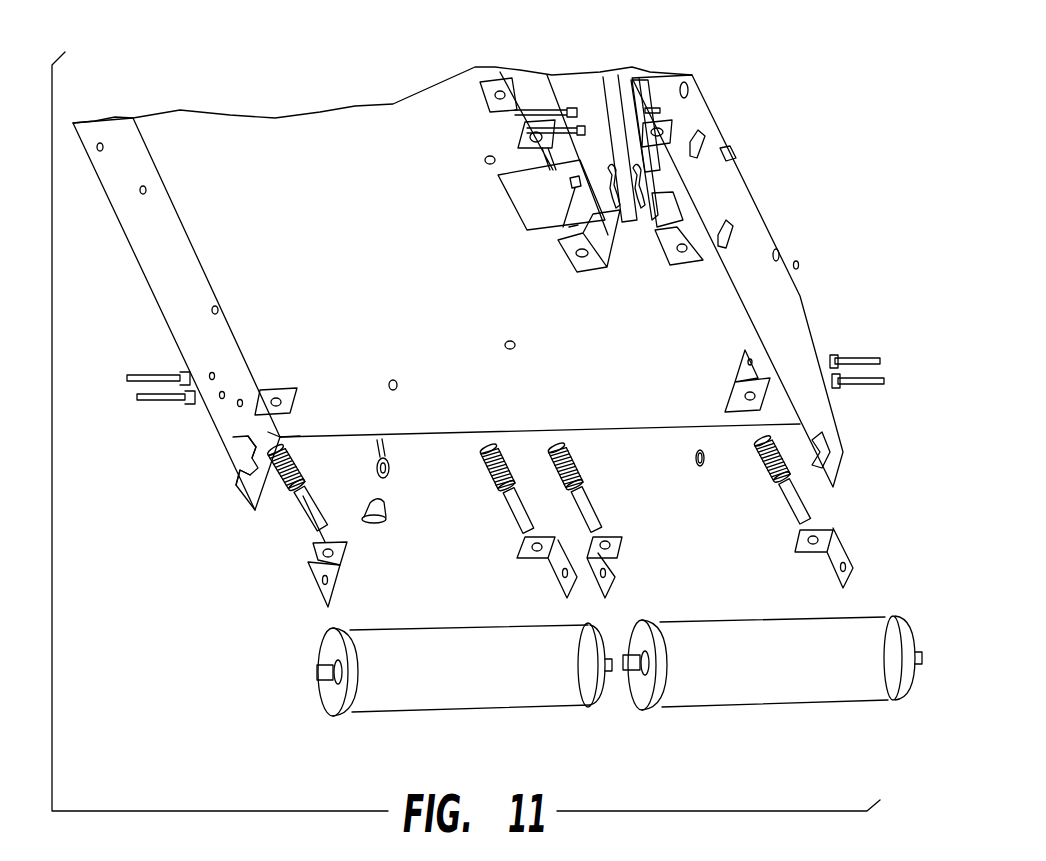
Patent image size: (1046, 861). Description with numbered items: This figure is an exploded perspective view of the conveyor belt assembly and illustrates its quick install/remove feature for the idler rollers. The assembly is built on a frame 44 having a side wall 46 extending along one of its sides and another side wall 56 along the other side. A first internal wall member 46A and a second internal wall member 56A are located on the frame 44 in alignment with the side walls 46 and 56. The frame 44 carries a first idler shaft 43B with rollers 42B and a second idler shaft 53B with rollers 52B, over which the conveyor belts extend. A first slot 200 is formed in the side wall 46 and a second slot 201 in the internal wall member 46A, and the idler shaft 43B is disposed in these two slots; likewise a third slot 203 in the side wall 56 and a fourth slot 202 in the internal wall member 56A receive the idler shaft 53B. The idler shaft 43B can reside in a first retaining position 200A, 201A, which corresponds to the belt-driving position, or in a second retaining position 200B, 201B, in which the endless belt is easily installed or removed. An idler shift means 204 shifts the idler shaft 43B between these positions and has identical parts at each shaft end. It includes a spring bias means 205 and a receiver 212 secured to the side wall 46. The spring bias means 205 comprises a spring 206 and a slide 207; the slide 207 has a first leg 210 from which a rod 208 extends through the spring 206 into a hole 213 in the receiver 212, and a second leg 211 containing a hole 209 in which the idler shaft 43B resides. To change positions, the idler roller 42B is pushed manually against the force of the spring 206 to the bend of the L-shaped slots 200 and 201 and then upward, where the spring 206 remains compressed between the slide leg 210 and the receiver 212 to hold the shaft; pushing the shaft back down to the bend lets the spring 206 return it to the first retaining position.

The frame 44 is at (450, 107).
The side wall 46 is at (122, 140).
The first internal wall member 46A is at (588, 88).
The side wall 56 is at (697, 116).
The second internal wall member 56A is at (620, 92).
The first slot 200 is at (240, 458).
The first retaining position 200A is at (253, 472).
The second retaining position 200B is at (252, 447).
The second slot 201 is at (598, 190).
The first retaining position 201A is at (572, 242).
The second retaining position 201B is at (572, 182).
The fourth slot 202 is at (637, 205).
The third slot 203 is at (832, 456).
The idler shift means 204 is at (304, 527).
The spring bias means 205 is at (300, 447).
The spring 206 is at (298, 464).
The slide 207 is at (358, 547).
The rod 208 is at (315, 513).
The hole 209 is at (322, 583).
The first leg 210 is at (342, 557).
The second leg 211 is at (335, 598).
The receiver 212 is at (303, 436).
The hole 213 is at (279, 396).
The roller 42B is at (497, 650).
The first idler shaft 43B is at (312, 672).
The roller 52B is at (796, 640).
The second idler shaft 53B is at (618, 660).